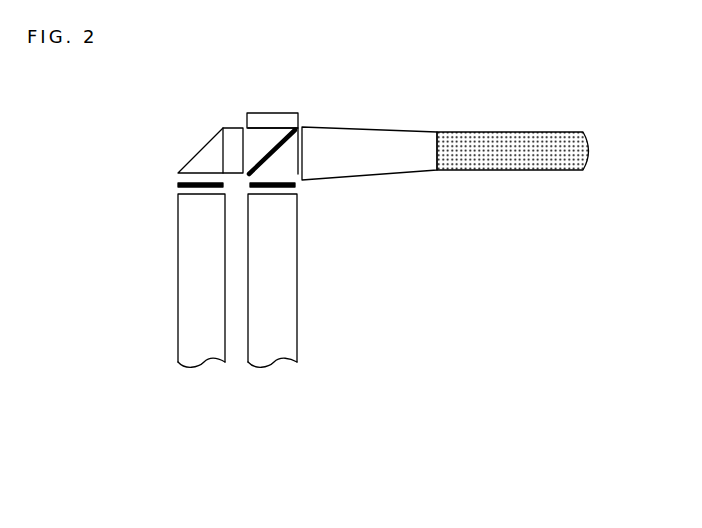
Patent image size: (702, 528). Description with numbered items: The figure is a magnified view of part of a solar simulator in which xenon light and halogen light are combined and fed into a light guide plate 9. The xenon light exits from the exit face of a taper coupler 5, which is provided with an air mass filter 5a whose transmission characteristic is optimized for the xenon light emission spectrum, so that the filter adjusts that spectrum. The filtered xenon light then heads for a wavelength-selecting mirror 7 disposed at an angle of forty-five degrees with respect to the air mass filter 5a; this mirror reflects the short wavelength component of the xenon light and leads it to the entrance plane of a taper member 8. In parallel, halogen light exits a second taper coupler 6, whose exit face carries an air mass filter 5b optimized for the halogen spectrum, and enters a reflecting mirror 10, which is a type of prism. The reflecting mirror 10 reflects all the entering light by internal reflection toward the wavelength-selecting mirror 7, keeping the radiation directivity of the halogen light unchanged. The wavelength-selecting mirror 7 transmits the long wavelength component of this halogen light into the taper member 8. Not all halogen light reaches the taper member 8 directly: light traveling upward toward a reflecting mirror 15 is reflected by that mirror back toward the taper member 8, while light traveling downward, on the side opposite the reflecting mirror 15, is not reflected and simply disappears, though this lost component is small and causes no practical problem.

The taper coupler 5 is at (287, 267).
The air mass filter 5a is at (295, 184).
The air mass filter 5b is at (178, 184).
The taper coupler 6 is at (188, 268).
The wavelength-selecting mirror 7 is at (270, 150).
The taper member 8 is at (370, 142).
The light guide plate 9 is at (512, 140).
The reflecting mirror 10 is at (206, 157).
The reflecting mirror 15 is at (282, 119).